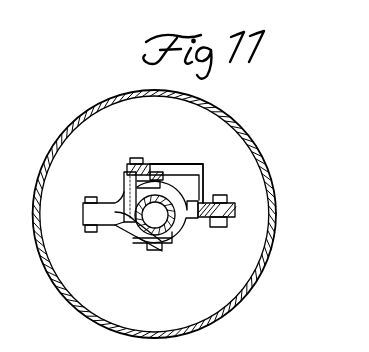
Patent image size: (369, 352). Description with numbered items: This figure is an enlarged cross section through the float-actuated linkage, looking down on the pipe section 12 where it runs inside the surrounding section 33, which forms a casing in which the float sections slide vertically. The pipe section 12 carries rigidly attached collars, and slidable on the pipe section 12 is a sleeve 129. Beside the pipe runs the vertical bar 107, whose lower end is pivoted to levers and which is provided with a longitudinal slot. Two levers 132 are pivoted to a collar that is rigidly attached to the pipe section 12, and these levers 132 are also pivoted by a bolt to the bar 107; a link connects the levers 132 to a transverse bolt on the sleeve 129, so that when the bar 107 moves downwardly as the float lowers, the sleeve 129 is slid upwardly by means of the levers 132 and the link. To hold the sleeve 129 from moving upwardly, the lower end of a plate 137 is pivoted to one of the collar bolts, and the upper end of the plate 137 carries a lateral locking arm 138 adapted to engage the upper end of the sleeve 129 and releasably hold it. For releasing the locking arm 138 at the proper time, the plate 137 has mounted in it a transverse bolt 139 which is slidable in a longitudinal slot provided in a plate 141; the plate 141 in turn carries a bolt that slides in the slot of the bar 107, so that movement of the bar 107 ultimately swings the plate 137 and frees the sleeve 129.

The pipe section 12 is at (138, 245).
The section 33 is at (266, 255).
The vertical bar 107 is at (235, 207).
The sleeve 129 is at (171, 246).
The levers 132 is at (172, 236).
The plate 137 is at (148, 165).
The lateral locking arm 138 is at (125, 179).
The transverse bolt 139 is at (137, 158).
The plate 141 is at (205, 168).